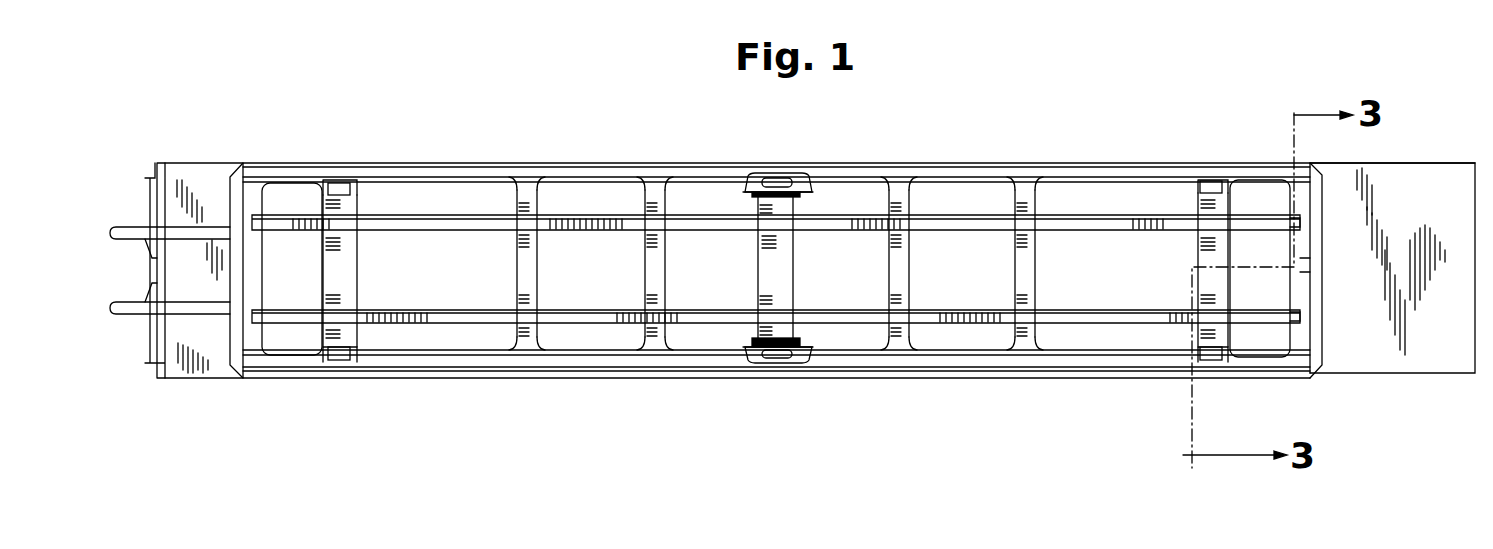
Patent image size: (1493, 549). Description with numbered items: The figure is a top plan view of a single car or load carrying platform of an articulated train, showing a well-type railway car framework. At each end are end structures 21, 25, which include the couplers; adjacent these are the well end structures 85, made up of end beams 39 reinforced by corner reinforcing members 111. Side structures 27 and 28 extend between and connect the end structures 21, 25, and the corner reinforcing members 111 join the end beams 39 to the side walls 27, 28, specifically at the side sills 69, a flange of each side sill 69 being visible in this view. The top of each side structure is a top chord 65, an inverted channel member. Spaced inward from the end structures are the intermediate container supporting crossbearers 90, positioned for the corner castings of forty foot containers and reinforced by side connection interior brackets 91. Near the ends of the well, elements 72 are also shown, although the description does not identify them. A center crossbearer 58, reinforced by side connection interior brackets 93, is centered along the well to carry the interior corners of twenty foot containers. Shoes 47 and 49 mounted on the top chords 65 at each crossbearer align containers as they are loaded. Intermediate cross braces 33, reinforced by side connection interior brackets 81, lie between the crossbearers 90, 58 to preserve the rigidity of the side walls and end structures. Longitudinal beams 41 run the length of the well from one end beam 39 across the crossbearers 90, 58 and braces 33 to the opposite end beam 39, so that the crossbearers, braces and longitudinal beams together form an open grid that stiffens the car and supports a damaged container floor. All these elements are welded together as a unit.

The end structure 21 is at (1418, 378).
The end structure 25 is at (187, 380).
The side structure 27 is at (940, 215).
The side wall 28 is at (925, 323).
The intermediate cross brace 33 is at (530, 257).
The end beam 39 is at (252, 242).
The longitudinal beam 41 is at (483, 215).
The shoe 47 is at (335, 183).
The shoe 49 is at (338, 362).
The center crossbearer 58 is at (790, 258).
The top chord 65 is at (835, 185).
The side sill 69 is at (430, 190).
The end support 72 is at (292, 183).
The side connection interior bracket 81 is at (527, 177).
The well end structure 85 is at (1303, 263).
The intermediate crossbearer 90 is at (353, 263).
The side connection interior bracket 91 is at (352, 177).
The side connection interior bracket 93 is at (777, 177).
The corner reinforcing member 111 is at (255, 167).